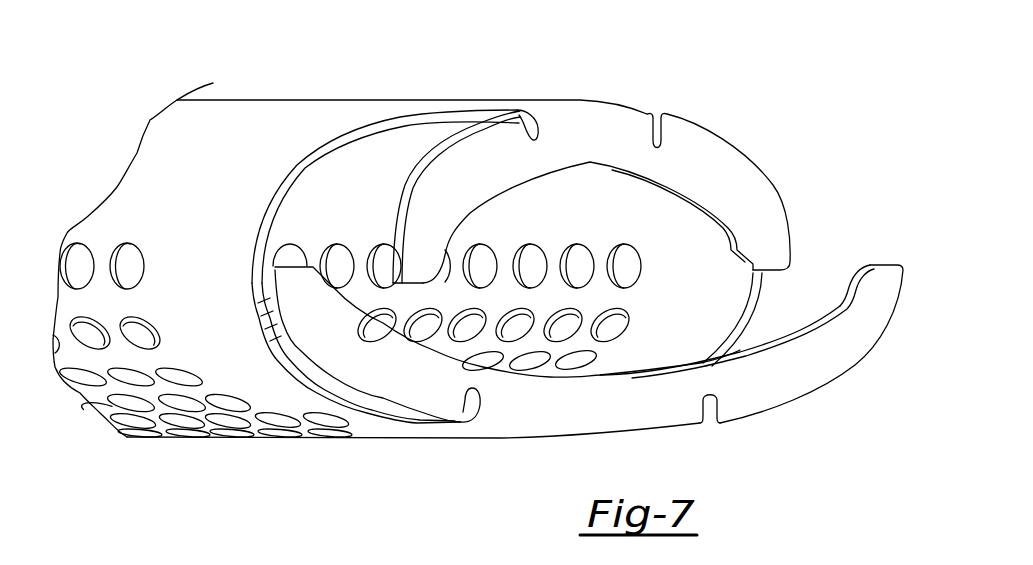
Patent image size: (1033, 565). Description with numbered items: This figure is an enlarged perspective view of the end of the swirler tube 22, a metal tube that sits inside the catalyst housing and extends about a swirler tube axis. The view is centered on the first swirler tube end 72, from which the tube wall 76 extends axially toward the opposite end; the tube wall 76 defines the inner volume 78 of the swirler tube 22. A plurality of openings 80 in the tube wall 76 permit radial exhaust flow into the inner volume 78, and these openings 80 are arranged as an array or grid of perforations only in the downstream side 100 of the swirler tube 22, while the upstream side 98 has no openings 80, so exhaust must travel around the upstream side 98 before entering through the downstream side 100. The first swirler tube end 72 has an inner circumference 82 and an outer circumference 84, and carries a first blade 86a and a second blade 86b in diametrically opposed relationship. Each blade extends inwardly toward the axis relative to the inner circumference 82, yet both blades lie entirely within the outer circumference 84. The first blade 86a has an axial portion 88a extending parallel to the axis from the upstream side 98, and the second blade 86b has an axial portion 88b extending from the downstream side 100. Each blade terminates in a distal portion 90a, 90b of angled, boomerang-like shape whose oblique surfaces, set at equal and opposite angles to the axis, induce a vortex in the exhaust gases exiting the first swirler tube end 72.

The swirler tube 22 is at (784, 98).
The first swirler tube end 72 is at (342, 84).
The tube wall 76 is at (275, 338).
The inner volume 78 is at (668, 294).
The openings 80 is at (83, 257).
The inner circumference 82 is at (363, 156).
The outer circumference 84 is at (295, 162).
The first blade 86a is at (795, 218).
The second blade 86b is at (908, 259).
The axial portion of the first blade 88a is at (477, 100).
The axial portion of the second blade 88b is at (440, 433).
The distal portion of the first blade 90a is at (710, 170).
The distal portion of the second blade 90b is at (767, 380).
The upstream side 98 is at (312, 104).
The downstream side 100 is at (307, 419).